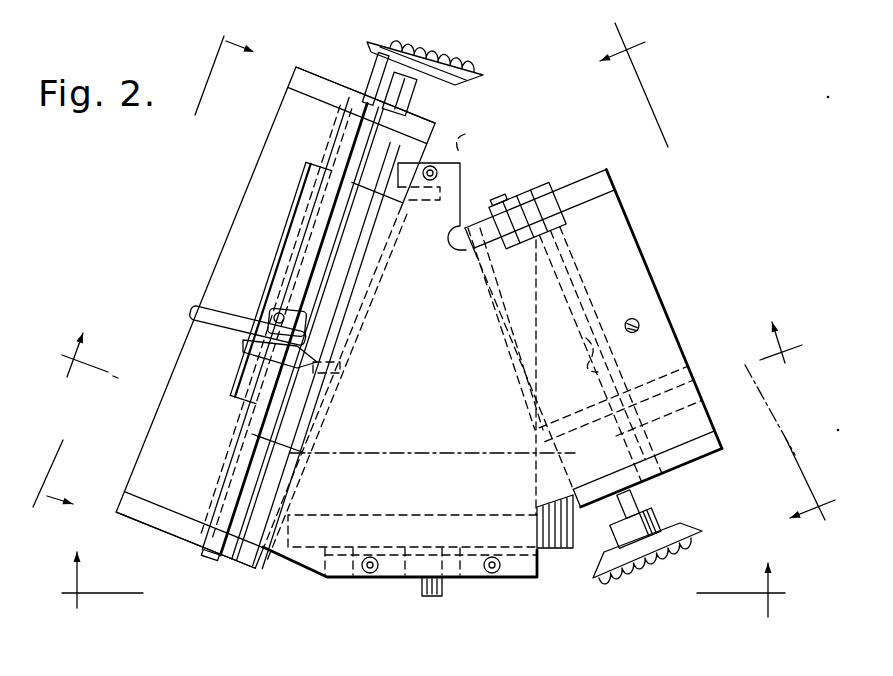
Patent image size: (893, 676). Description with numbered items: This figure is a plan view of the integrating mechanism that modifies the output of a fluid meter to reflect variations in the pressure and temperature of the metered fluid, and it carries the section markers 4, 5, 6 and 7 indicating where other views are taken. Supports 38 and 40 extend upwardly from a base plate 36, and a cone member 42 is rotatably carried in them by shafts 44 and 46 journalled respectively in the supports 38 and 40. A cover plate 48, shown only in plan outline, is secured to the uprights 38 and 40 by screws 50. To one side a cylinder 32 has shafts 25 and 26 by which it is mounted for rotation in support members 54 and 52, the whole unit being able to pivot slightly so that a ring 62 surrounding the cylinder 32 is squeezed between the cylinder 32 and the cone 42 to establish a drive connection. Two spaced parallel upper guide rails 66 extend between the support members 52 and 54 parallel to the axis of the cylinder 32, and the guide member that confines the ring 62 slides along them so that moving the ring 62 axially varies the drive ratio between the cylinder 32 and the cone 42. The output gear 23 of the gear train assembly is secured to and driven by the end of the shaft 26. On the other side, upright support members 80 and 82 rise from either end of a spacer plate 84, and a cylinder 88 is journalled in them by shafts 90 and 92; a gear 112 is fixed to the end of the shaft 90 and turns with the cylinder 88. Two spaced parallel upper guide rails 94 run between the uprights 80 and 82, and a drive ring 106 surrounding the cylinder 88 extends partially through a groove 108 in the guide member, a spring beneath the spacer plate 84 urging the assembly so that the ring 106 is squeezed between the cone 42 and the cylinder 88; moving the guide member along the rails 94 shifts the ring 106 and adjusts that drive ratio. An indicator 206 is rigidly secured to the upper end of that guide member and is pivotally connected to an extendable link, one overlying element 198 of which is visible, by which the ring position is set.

The section line 4- 4 is at (152, 273).
The section line 5- 5 is at (421, 580).
The section line 6- 6 is at (704, 272).
The section line 7- 7 is at (432, 378).
The output gear 23 is at (702, 535).
The shaft 25 is at (505, 205).
The shaft 26 is at (630, 502).
The cylinder 32 is at (636, 417).
The base plate 36 is at (508, 200).
The support 38 is at (474, 135).
The support 40 is at (355, 578).
The cone member 42 is at (556, 548).
The shaft 44 is at (433, 162).
The shaft 46 is at (425, 597).
The cover plate 48 is at (458, 200).
The screws 50 is at (437, 167).
The support member 52 is at (706, 454).
The support member 54 is at (606, 186).
The ring 62 is at (675, 392).
The upper guide rails 66 is at (586, 338).
The upright support member 80 is at (290, 80).
The upright support member 82 is at (164, 523).
The spacer plate 84 is at (154, 421).
The cylinder 88 is at (340, 240).
The shaft 90 is at (363, 154).
The shaft 92 is at (221, 540).
The upper guide rails 94 is at (205, 490).
The drive ring 106 is at (247, 338).
The groove 108 is at (248, 338).
The gear 112 is at (478, 78).
The element 198 is at (373, 72).
The indicator 206 is at (288, 362).